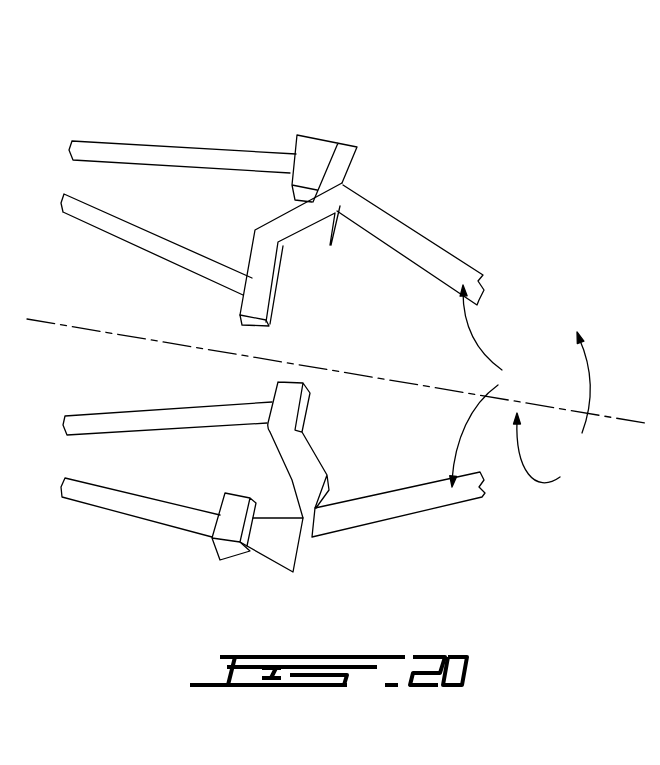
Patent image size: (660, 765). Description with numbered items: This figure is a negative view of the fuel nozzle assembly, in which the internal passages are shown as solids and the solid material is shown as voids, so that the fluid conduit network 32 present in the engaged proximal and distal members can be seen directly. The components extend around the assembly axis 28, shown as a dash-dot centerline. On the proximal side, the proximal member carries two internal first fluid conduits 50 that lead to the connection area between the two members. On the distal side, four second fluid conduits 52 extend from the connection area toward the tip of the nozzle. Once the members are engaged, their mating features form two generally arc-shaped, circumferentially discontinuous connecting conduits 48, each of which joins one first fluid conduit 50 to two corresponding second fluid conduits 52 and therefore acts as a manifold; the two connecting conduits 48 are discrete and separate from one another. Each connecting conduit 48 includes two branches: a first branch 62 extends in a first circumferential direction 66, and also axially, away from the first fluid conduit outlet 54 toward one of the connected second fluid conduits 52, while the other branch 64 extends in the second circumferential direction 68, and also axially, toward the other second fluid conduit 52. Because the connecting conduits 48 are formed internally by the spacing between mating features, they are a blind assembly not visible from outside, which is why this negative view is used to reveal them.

The assembly axis 28 is at (40, 318).
The fluid conduit network 32 is at (452, 221).
The connecting conduit 48 is at (306, 250).
The first fluid conduit 50 is at (488, 386).
The second fluid conduit 52 is at (167, 178).
The first fluid conduit outlet 54 is at (322, 523).
The first branch 62 is at (288, 438).
The second branch 64 is at (258, 555).
The first circumferential direction 66 is at (550, 483).
The second circumferential direction 68 is at (590, 387).